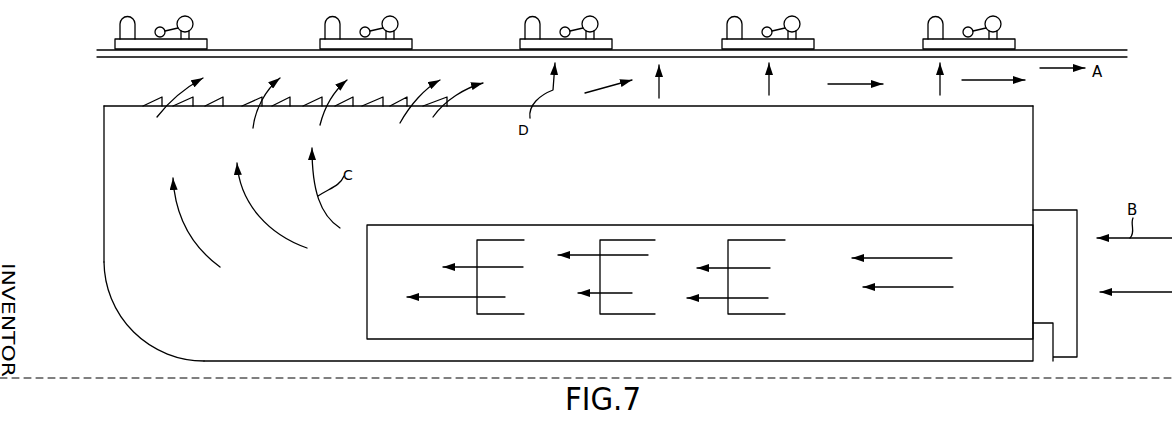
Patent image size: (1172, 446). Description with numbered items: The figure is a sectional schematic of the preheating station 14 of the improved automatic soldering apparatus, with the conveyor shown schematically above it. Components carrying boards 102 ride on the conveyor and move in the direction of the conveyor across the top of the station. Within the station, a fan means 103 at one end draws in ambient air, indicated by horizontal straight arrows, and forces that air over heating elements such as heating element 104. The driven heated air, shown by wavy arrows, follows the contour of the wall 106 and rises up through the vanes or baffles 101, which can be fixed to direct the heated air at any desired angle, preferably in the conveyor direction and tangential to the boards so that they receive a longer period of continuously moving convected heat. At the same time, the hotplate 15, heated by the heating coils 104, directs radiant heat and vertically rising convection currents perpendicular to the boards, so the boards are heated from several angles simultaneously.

The preheating station 14 is at (392, 372).
The hotplate 15 is at (706, 107).
The vanes or baffles 101 is at (137, 98).
The components carrying boards 102 is at (1040, 31).
The fan means 103 is at (1060, 222).
The heating element 104 is at (763, 240).
The wall 106 is at (137, 331).